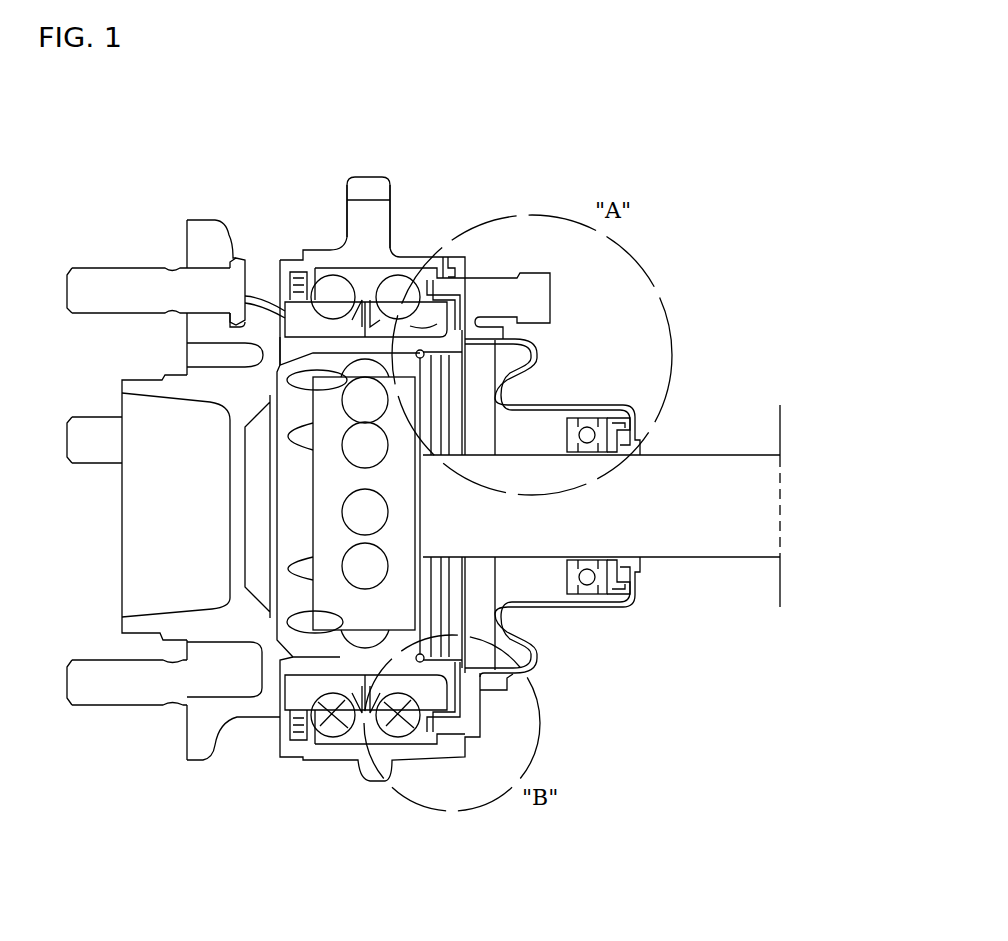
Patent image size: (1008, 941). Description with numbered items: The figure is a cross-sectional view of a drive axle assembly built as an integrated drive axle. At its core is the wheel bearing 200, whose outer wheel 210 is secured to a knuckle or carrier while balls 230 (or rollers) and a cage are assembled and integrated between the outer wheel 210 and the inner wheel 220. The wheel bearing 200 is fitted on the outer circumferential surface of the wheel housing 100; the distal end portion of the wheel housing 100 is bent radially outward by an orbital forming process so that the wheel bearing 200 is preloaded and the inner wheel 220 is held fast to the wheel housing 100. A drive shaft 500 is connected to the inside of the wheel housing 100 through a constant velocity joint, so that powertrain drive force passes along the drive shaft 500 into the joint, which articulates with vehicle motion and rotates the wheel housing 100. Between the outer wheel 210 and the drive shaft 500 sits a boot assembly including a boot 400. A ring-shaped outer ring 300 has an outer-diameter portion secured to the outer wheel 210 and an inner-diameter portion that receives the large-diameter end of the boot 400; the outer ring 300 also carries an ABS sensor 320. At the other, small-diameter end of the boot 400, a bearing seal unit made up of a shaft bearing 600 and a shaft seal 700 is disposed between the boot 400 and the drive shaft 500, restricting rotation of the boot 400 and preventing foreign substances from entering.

The wheel housing 100 is at (272, 357).
The wheel bearing 200 is at (330, 227).
The outer wheel 210 is at (370, 250).
The inner wheel 220 is at (397, 297).
The balls 230 is at (410, 326).
The outer ring 300 is at (450, 287).
The ABS sensor 320 is at (520, 300).
The boot 400 is at (520, 370).
The drive shaft 500 is at (757, 504).
The shaft bearing 600 is at (587, 585).
The shaft seal 700 is at (623, 585).